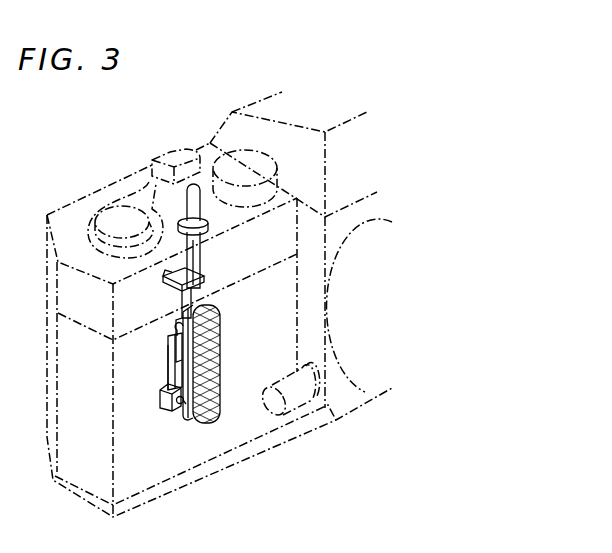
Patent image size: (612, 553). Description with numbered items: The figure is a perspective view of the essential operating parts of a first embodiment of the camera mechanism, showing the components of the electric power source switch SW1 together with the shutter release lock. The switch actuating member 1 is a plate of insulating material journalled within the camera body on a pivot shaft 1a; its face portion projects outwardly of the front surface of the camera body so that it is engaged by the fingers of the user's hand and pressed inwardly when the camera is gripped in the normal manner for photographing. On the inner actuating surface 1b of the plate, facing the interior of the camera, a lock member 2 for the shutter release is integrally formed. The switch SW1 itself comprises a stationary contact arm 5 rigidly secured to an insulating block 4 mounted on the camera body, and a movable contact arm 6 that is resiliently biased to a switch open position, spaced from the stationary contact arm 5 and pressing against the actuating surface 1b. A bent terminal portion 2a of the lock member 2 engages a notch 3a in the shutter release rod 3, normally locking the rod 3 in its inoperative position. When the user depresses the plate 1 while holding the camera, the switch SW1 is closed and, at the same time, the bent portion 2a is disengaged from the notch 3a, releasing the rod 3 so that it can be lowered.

The switch actuating member 1 is at (219, 330).
The pivot shaft 1a is at (182, 406).
The inner actuating surface 1b is at (180, 312).
The lock member 2 is at (164, 283).
The bent terminal portion 2a is at (206, 260).
The shutter release rod 3 is at (201, 246).
The notch 3a is at (203, 277).
The insulating block 4 is at (162, 398).
The stationary contact arm 5 is at (176, 326).
The movable contact arm 6 is at (168, 377).
The electric power source switch SW1 is at (170, 362).